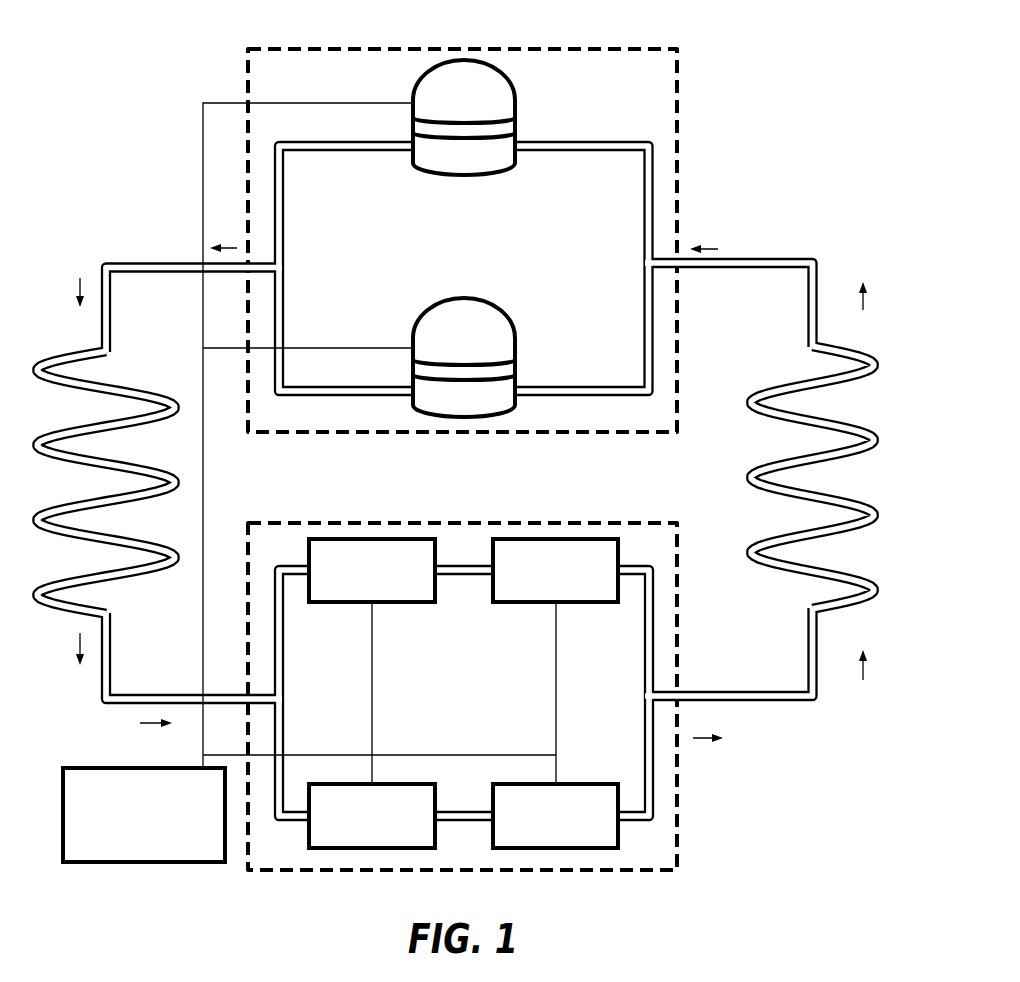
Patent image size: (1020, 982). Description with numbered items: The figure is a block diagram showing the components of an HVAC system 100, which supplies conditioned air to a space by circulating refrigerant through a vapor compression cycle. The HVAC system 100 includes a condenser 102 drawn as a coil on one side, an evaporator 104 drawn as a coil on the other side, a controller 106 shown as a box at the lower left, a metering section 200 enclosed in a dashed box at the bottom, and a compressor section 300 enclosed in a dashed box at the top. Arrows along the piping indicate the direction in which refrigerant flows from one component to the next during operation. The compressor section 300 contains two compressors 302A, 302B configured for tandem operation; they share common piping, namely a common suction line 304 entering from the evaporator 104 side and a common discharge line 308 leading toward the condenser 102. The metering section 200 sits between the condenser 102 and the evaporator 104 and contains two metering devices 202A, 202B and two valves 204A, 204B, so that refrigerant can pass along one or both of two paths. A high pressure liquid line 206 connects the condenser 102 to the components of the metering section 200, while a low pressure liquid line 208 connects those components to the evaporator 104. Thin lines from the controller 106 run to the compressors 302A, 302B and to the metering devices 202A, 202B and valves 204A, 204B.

The HVAC system 100 is at (150, 131).
The condenser 102 is at (125, 386).
The evaporator 104 is at (802, 380).
The controller 106 is at (128, 825).
The metering section 200 is at (620, 523).
The metering device 202A is at (535, 580).
The metering device 202B is at (535, 825).
The valve 204A is at (351, 580).
The valve 204B is at (351, 825).
The high pressure liquid line 206 is at (178, 697).
The low pressure liquid line 208 is at (770, 692).
The compressor section 300 is at (599, 49).
The compressor 302A is at (515, 92).
The compressor 302B is at (515, 332).
The common suction line 304 is at (730, 259).
The common discharge line 308 is at (125, 263).